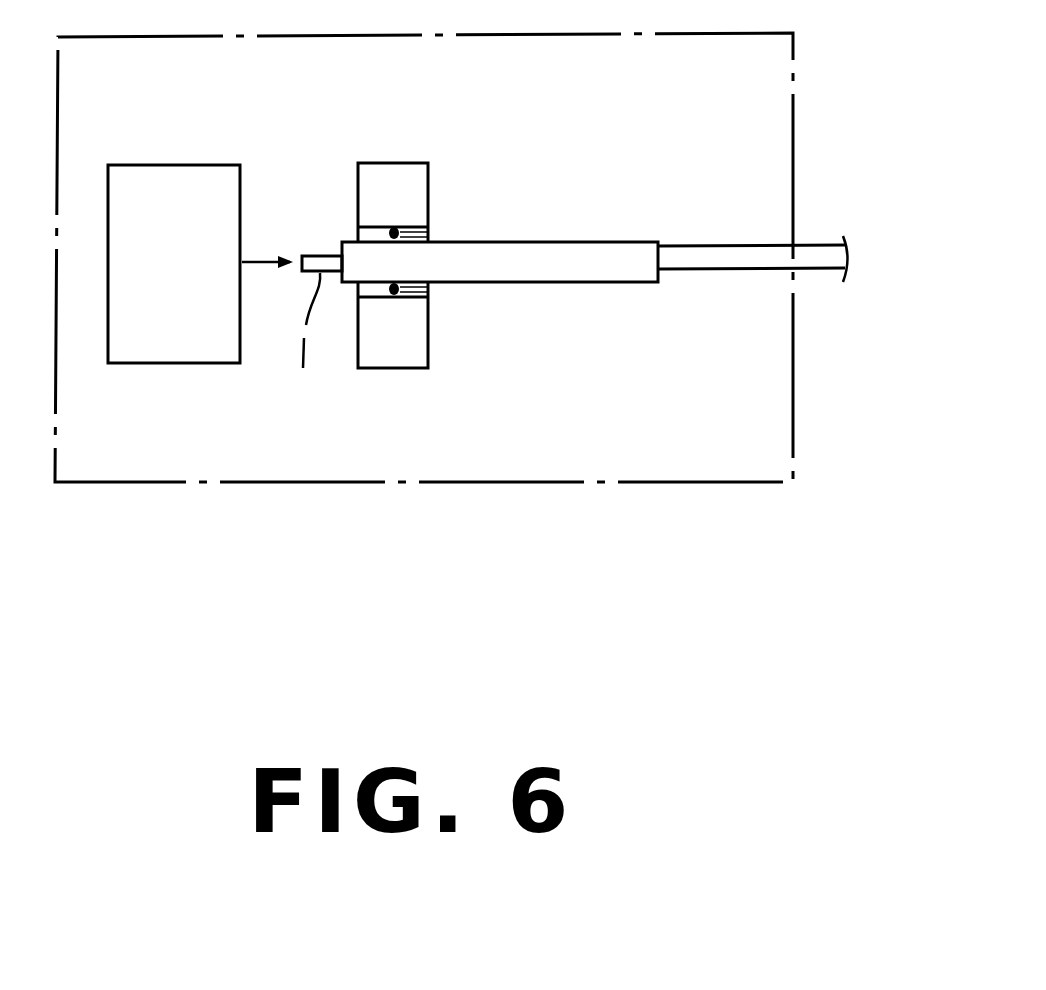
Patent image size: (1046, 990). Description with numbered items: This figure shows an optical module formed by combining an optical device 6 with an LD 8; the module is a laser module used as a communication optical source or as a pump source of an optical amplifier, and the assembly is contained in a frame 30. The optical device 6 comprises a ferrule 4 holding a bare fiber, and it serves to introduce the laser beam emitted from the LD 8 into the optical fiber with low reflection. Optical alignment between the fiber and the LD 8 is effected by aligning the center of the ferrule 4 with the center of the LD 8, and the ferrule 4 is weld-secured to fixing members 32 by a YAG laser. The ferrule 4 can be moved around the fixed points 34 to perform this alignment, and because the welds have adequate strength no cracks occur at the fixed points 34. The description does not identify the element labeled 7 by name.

The ferrule 4 is at (514, 240).
The optical device 6 is at (552, 292).
The optical module 7 is at (390, 492).
The LD 8 is at (176, 165).
The frame 30 is at (795, 104).
The fixing members 32 is at (392, 163).
The fixed point 34 is at (385, 234).